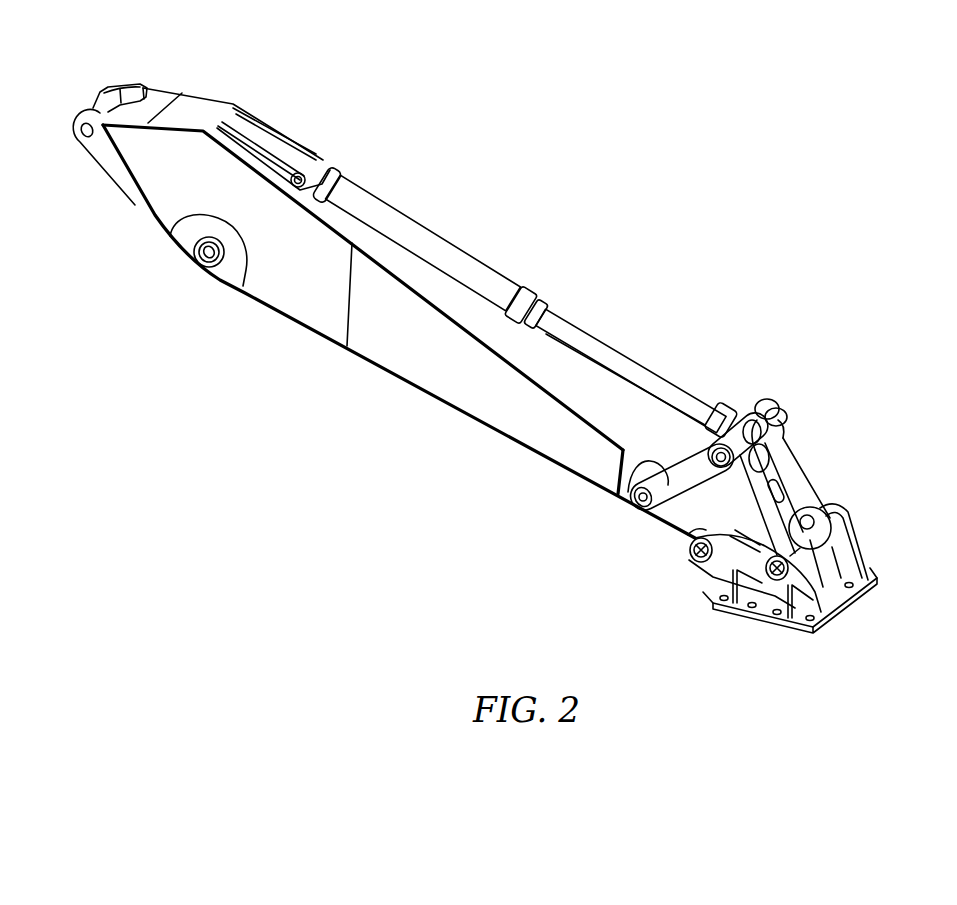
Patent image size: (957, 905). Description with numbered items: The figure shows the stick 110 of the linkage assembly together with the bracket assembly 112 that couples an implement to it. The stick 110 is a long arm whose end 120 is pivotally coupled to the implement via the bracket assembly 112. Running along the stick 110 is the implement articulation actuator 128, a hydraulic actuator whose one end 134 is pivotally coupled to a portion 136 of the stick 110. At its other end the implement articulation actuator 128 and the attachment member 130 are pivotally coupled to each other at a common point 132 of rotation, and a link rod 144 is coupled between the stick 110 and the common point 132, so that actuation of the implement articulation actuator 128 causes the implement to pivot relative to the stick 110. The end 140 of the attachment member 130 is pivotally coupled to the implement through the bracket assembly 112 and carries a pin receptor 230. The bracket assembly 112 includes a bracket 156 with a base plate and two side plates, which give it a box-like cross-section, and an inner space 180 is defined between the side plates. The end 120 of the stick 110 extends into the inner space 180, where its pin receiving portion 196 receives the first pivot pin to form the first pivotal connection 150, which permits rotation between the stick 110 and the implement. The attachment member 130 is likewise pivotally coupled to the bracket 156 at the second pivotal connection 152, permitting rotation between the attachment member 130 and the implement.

The stick 110 is at (393, 378).
The bracket assembly 112 is at (867, 528).
The end of the stick 120 is at (689, 553).
The implement articulation actuator 128 is at (421, 223).
The attachment member 130 is at (793, 455).
The common point of rotation 132 is at (682, 455).
The end of the implement articulation actuator 134 is at (337, 167).
The portion of the stick 136 is at (316, 142).
The end of the attachment member 140 is at (840, 503).
The link rod 144 is at (620, 495).
The first pivotal connection 150 is at (690, 572).
The second pivotal connection 152 is at (760, 580).
The bracket 156 is at (867, 580).
The inner space 180 is at (752, 518).
The pin receiving portion 196 is at (686, 533).
The pin receptor 230 is at (833, 558).